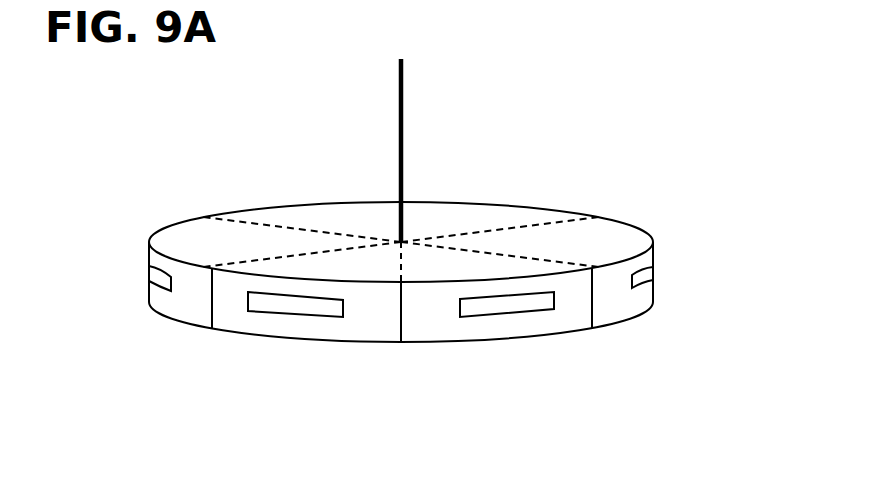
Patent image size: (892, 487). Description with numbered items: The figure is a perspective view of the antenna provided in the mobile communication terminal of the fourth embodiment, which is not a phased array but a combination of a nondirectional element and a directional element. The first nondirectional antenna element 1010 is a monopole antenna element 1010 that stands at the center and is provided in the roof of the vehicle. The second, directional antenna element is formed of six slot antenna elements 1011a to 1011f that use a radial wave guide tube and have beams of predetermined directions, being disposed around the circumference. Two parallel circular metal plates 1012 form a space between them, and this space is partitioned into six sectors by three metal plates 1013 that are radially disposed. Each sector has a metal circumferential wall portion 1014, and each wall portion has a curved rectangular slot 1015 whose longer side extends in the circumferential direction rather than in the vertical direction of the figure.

The first nondirectional antenna element 1010 is at (398, 122).
The slot antenna element 1011a is at (401, 336).
The slot antenna element 1011f is at (630, 288).
The circular metal plate 1012 is at (438, 213).
The metal plate 1013 is at (283, 258).
The metal circumferential wall portion 1014 is at (227, 283).
The curved rectangular slot 1015 is at (653, 272).